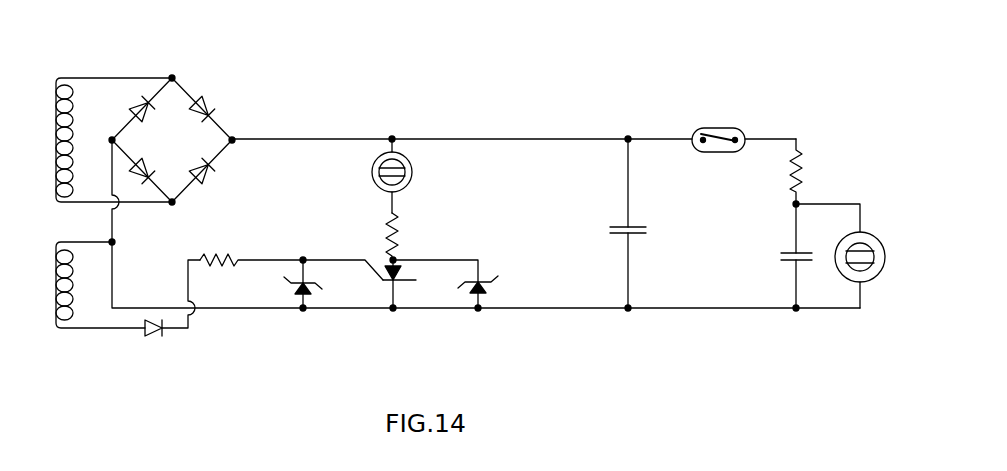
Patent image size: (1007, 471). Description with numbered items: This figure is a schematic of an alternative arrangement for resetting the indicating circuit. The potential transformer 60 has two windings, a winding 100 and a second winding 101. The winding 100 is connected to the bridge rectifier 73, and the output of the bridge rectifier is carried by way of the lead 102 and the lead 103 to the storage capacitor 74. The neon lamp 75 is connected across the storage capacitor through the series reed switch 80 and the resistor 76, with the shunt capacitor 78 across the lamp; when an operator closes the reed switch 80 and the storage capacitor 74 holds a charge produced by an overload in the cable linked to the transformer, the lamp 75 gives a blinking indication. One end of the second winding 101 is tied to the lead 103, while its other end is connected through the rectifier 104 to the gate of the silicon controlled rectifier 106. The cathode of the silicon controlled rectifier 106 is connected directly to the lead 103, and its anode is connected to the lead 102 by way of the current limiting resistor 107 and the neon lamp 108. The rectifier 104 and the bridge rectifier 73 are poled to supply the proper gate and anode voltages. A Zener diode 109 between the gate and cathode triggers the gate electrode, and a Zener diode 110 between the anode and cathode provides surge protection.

The potential transformer 60 is at (85, 231).
The bridge rectifier 73 is at (182, 149).
The storage capacitor 74 is at (616, 226).
The neon lamp 75 is at (872, 235).
The resistor 76 is at (805, 161).
The shunt capacitor 78 is at (790, 253).
The reed switch 80 is at (713, 100).
The winding 100 is at (53, 77).
The second winding 101 is at (55, 325).
The lead 102 is at (303, 138).
The lead 103 is at (113, 288).
The rectifier 104 is at (157, 337).
The silicon controlled rectifier 106 is at (383, 281).
The current limiting resistor 107 is at (403, 215).
The neon lamp 108 is at (414, 162).
The Zener diode 109 is at (302, 308).
The Zener diode 110 is at (490, 292).